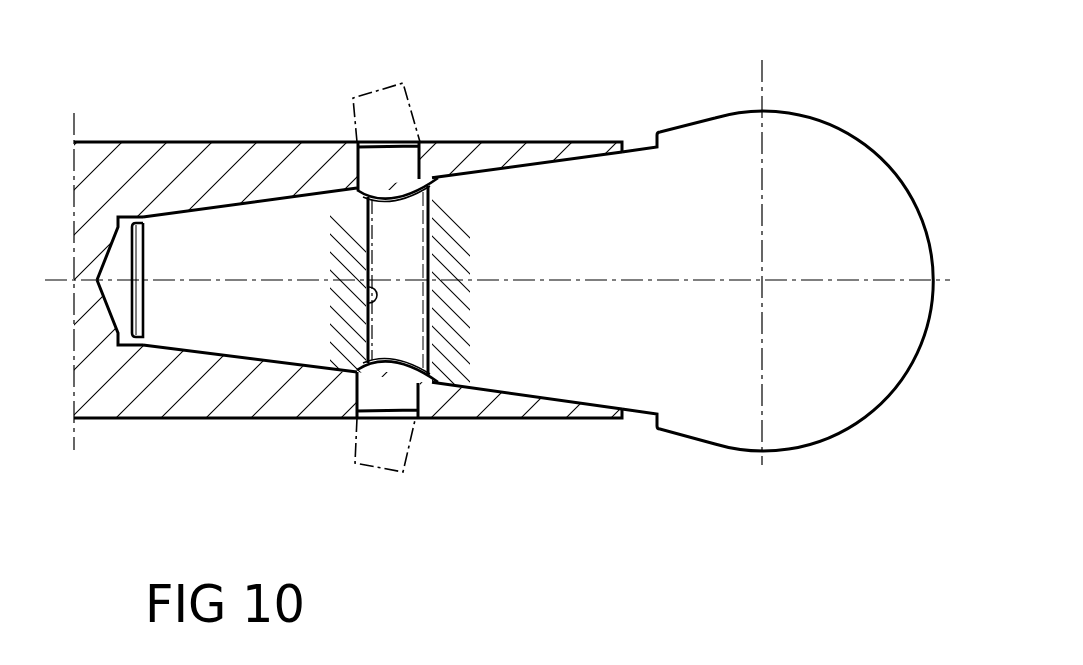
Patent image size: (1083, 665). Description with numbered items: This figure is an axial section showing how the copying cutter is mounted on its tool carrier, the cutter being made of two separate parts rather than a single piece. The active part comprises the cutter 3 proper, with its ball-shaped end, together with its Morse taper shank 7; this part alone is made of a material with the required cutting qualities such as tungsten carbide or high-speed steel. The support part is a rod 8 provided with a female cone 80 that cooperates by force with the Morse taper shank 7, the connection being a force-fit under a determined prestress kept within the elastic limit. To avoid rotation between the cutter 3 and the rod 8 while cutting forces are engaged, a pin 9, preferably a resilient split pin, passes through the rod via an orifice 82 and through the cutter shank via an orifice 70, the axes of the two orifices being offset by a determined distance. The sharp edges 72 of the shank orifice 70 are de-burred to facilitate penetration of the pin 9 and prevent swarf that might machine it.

The cutter 3 is at (800, 410).
The Morse taper shank 7 is at (232, 333).
The rod 8 is at (250, 162).
The pin 9 is at (368, 95).
The orifice 70 is at (369, 305).
The sharp edges 72 is at (433, 180).
The female cone 80 is at (200, 216).
The orifice 82 is at (372, 406).